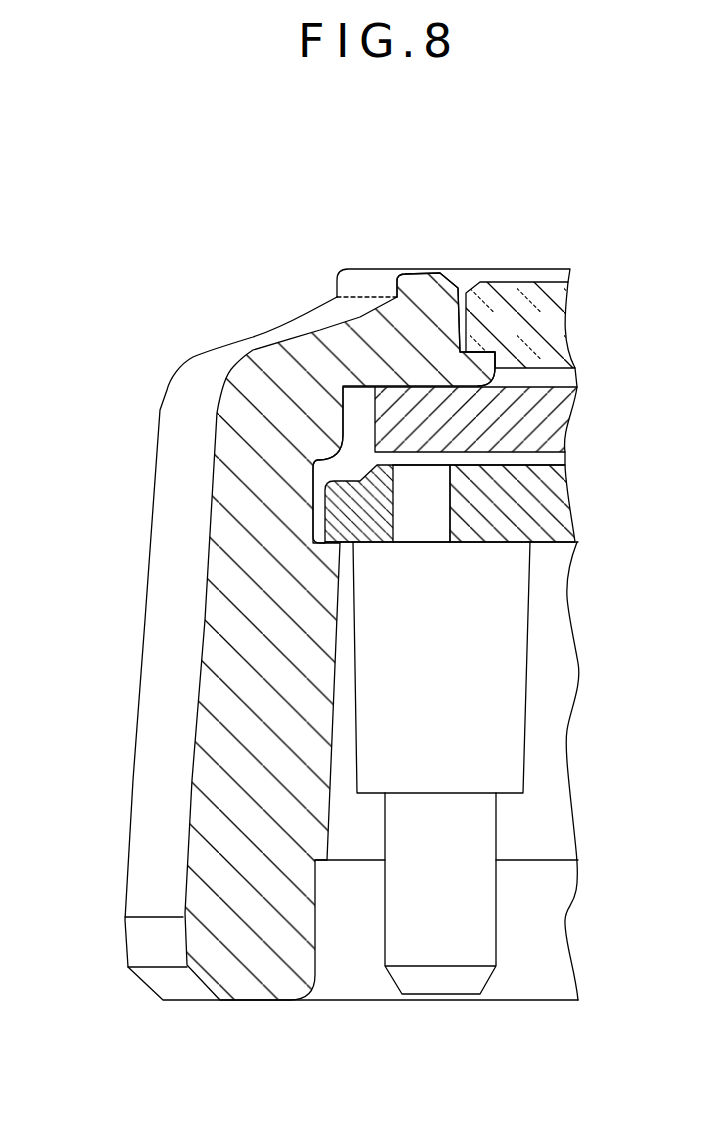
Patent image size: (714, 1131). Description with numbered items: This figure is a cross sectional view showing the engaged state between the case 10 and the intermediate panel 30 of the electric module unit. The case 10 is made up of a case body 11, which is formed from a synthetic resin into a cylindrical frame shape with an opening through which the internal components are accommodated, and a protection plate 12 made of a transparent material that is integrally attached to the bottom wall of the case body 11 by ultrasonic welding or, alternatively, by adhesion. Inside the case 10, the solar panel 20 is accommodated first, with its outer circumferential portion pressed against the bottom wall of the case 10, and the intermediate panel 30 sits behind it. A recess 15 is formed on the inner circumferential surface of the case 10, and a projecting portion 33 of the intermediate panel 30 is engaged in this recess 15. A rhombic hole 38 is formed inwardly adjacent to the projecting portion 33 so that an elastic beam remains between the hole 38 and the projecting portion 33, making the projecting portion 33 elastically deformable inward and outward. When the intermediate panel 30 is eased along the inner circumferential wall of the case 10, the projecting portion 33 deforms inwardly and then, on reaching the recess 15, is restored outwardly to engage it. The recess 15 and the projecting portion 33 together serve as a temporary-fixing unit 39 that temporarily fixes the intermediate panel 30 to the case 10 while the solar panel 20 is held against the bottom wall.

The case 10 is at (456, 276).
The case body 11 is at (421, 281).
The protection plate 12 is at (520, 287).
The recess 15 is at (313, 477).
The solar panel 20 is at (566, 410).
The intermediate panel 30 is at (566, 500).
The projecting portion 33 is at (337, 522).
The hole 38 is at (418, 543).
The temporary-fixing unit 39 is at (219, 465).